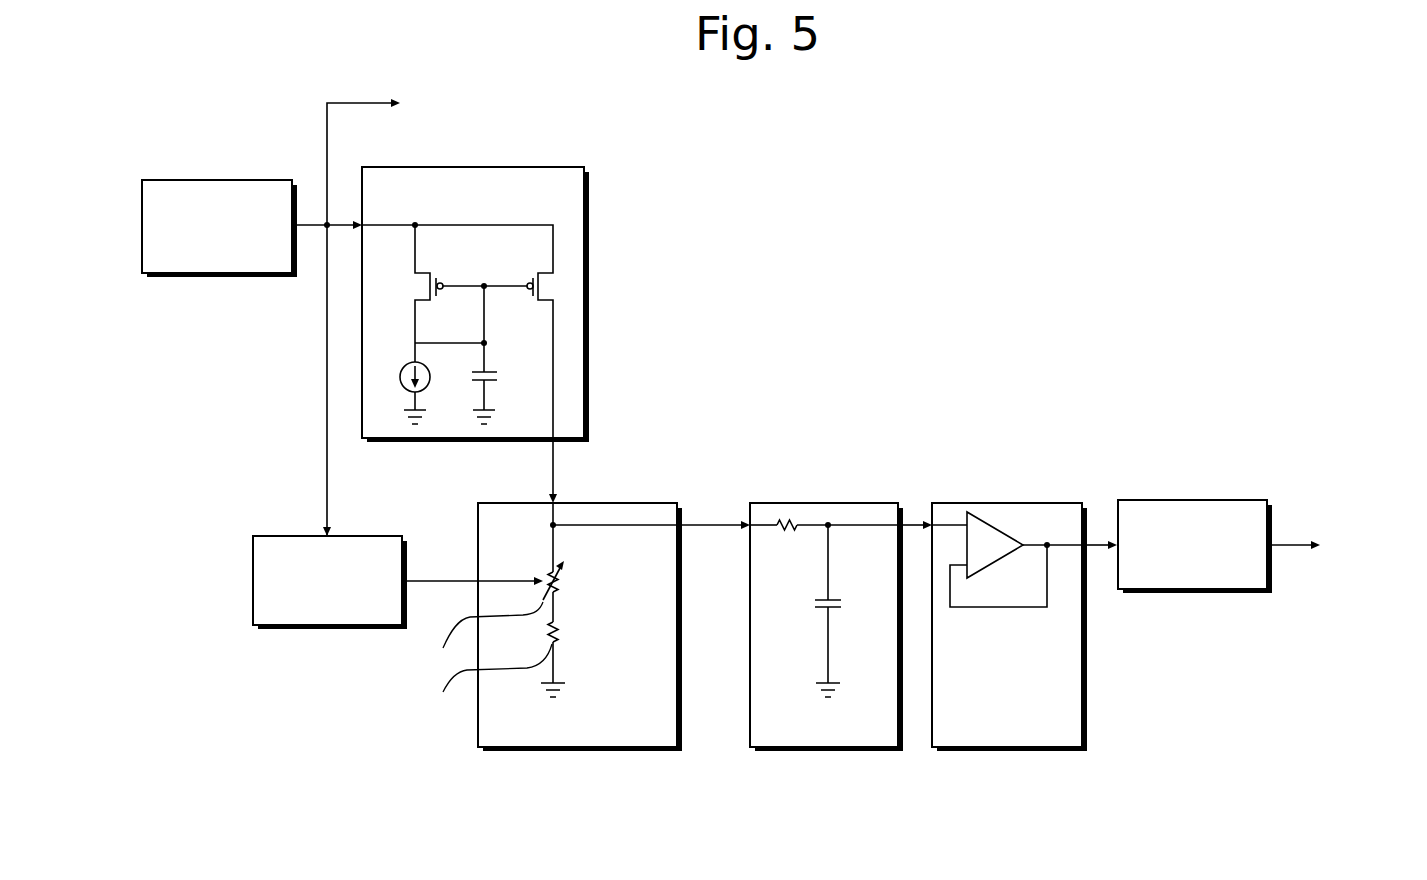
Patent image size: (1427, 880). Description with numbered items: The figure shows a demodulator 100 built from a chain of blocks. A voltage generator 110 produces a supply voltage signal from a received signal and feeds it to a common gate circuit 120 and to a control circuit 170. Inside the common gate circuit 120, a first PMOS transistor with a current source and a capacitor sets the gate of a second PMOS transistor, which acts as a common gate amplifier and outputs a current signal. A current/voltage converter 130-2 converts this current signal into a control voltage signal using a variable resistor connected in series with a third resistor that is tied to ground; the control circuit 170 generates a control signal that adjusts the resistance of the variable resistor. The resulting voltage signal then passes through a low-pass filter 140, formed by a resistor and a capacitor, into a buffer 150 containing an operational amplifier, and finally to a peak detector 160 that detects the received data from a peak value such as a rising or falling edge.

The demodulator 100 is at (1091, 237).
The voltage generator 110 is at (254, 180).
The common gate circuit 120 is at (543, 167).
The current/voltage converter 130-2 is at (643, 503).
The low-pass filter 140 is at (863, 503).
The buffer 150 is at (1045, 503).
The peak detector 160 is at (1232, 500).
The control circuit 170 is at (365, 536).